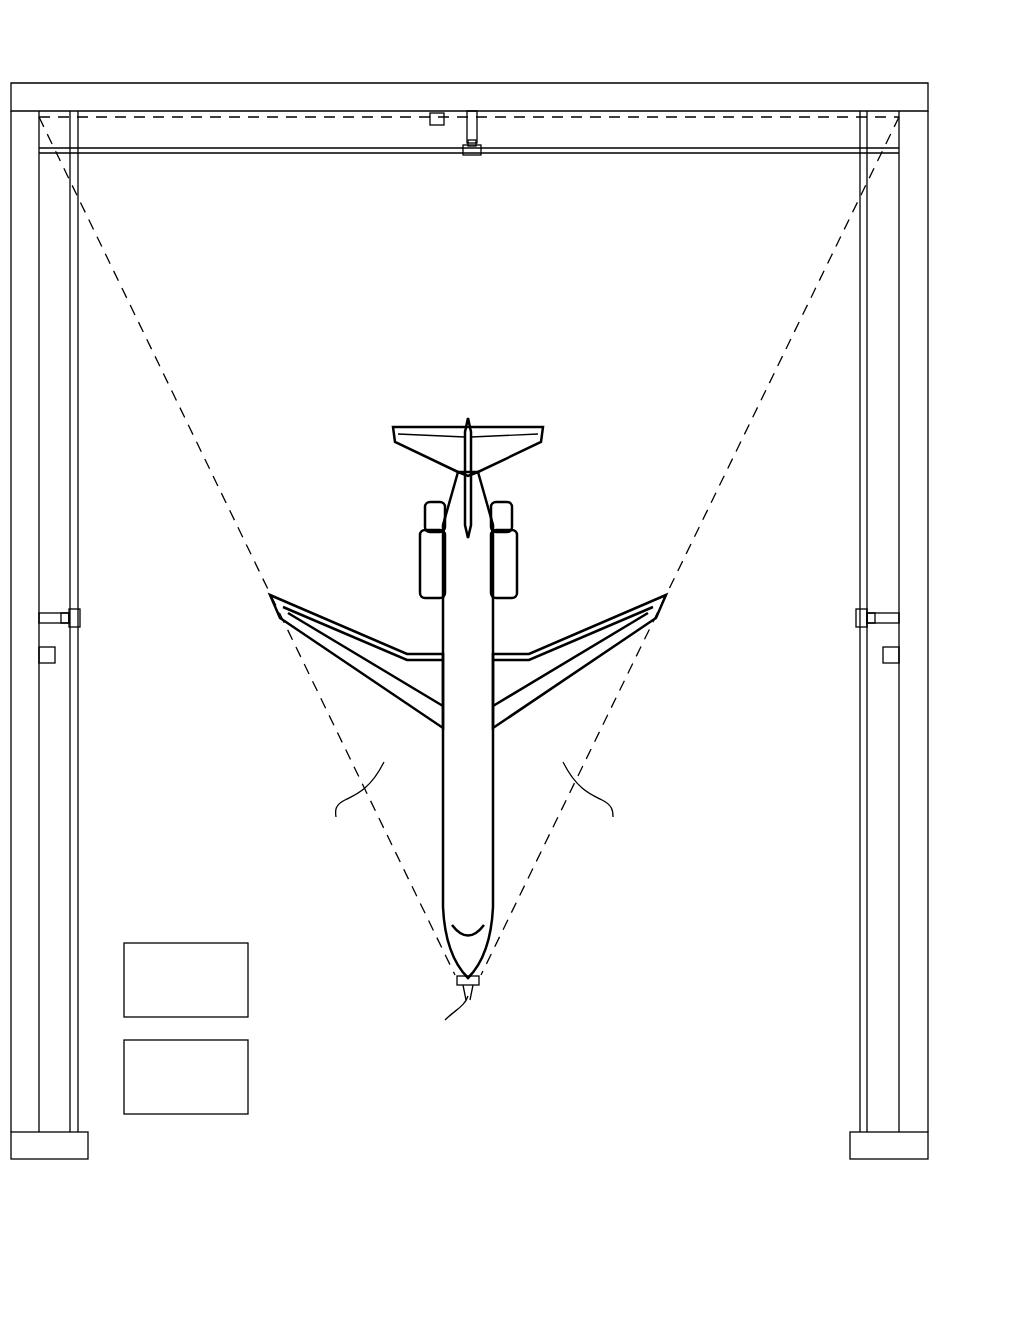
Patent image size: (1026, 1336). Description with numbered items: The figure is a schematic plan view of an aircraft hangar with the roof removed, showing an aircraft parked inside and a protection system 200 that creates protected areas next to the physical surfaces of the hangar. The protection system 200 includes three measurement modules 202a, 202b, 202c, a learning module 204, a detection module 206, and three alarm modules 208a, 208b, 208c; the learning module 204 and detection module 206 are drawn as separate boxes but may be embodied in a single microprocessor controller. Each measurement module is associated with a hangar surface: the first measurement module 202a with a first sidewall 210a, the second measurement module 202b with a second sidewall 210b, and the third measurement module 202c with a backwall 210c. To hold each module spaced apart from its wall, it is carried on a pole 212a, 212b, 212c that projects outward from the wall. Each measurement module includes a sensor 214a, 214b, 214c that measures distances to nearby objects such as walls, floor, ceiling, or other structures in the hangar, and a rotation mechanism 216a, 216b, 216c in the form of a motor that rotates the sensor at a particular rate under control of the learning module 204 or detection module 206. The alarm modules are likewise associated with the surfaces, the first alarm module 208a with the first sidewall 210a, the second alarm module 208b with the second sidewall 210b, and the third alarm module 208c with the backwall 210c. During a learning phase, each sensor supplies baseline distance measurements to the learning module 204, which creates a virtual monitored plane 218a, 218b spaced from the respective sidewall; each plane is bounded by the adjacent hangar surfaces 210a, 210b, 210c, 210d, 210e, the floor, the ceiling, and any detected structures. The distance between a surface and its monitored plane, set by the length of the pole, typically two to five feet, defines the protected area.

The protection system 200 is at (98, 52).
The first measurement module 202a is at (126, 586).
The second measurement module 202b is at (808, 582).
The third measurement module 202c is at (480, 166).
The learning module 204 is at (249, 958).
The detection module 206 is at (249, 1063).
The first alarm module 208a is at (56, 655).
The second alarm module 208b is at (883, 655).
The third alarm module 208c is at (430, 120).
The first sidewall 210a is at (33, 770).
The second sidewall 210b is at (905, 773).
The backwall 210c is at (685, 106).
The hangar surface 210d is at (88, 1146).
The hangar surface 210e is at (850, 1145).
The pole 212a is at (50, 611).
The pole 212b is at (887, 612).
The pole 212c is at (477, 127).
The sensor 214a is at (82, 612).
The sensor 214b is at (856, 613).
The sensor 214c is at (468, 156).
The rotation mechanism 216a is at (67, 609).
The rotation mechanism 216b is at (870, 609).
The rotation mechanism 216c is at (463, 143).
The monitored plane 218a is at (80, 724).
The monitored plane 218b is at (860, 719).